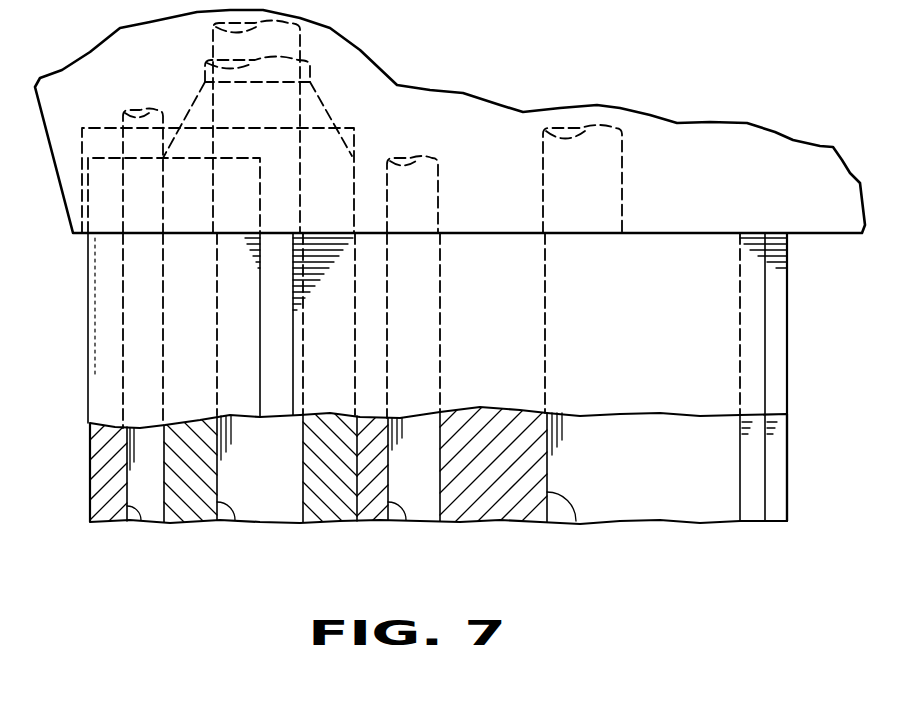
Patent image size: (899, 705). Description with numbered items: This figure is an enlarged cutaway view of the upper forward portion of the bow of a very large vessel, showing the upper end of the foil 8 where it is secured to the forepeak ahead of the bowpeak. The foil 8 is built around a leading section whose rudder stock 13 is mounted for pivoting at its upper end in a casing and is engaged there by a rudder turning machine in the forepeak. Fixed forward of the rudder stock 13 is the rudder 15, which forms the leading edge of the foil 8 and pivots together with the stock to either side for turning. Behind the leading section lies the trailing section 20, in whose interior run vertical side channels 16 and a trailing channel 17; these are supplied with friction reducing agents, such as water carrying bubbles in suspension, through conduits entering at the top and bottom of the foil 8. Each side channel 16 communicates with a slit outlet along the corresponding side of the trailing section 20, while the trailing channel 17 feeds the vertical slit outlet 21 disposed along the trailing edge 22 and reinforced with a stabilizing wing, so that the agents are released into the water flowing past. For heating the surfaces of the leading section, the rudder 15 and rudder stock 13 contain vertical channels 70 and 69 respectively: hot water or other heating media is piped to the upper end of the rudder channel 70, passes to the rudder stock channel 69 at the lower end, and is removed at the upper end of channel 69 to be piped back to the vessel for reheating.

The rudder 15 is at (90, 423).
The rudder channel 70 is at (130, 514).
The rudder stock 13 is at (198, 516).
The rudder stock channel 69 is at (238, 520).
The foil 8 is at (375, 516).
The vertical side channel 16 is at (410, 518).
The trailing section 20 is at (523, 515).
The trailing channel 17 is at (580, 520).
The trailing edge 22 is at (752, 520).
The vertical slit outlet 21 is at (782, 521).